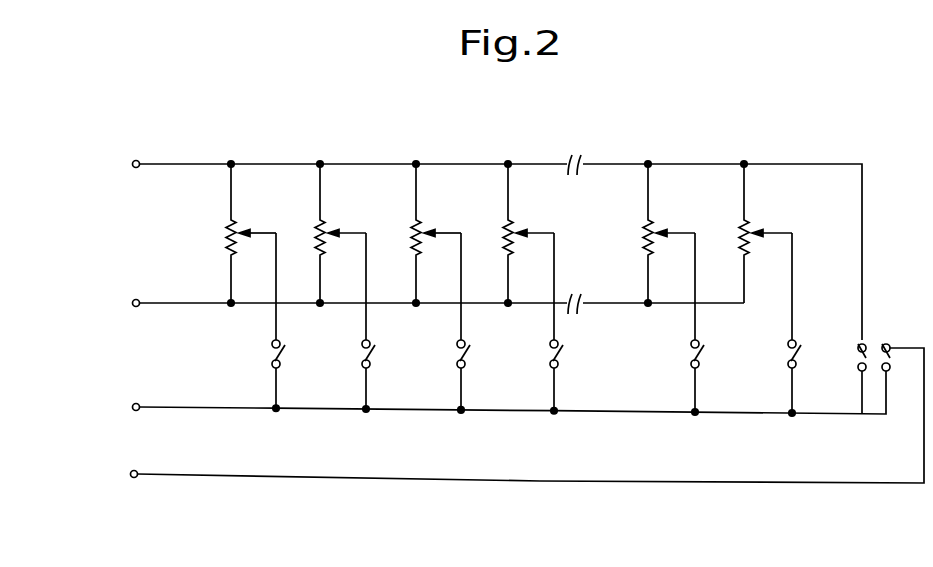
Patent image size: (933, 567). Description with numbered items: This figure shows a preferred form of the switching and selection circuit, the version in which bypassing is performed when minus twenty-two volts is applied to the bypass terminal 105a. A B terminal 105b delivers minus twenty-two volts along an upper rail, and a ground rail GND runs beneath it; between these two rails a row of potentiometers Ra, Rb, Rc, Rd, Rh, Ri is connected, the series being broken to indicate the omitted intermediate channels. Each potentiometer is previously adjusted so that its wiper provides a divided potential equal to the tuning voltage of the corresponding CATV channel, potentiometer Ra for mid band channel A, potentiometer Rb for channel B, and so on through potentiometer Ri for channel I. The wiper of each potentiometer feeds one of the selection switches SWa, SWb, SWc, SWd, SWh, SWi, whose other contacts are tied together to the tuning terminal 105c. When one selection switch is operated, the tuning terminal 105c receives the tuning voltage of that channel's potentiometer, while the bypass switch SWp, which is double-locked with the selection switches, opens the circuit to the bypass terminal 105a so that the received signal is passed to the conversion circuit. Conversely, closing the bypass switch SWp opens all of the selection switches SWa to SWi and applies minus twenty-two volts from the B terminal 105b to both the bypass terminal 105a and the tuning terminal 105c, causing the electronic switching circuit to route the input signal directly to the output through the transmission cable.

The B terminal 105b is at (474, 239).
The ground GND is at (412, 303).
The tuning terminal 105c is at (481, 395).
The bypass terminal 105a is at (500, 417).
The potentiometer Ra is at (251, 233).
The potentiometer Rb is at (340, 233).
The potentiometer Rc is at (436, 233).
The potentiometer Rd is at (528, 233).
The potentiometer Rh is at (669, 233).
The potentiometer Ri is at (765, 232).
The selection switch SWa is at (297, 322).
The selection switch SWb is at (387, 322).
The selection switch SWc is at (482, 323).
The selection switch SWd is at (575, 323).
The selection switch SWh is at (716, 324).
The selection switch SWi is at (811, 324).
The bypassing switch SWp is at (891, 345).